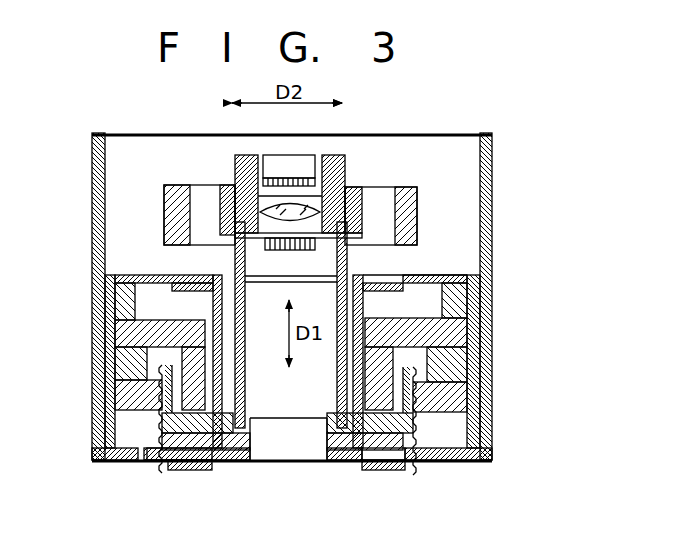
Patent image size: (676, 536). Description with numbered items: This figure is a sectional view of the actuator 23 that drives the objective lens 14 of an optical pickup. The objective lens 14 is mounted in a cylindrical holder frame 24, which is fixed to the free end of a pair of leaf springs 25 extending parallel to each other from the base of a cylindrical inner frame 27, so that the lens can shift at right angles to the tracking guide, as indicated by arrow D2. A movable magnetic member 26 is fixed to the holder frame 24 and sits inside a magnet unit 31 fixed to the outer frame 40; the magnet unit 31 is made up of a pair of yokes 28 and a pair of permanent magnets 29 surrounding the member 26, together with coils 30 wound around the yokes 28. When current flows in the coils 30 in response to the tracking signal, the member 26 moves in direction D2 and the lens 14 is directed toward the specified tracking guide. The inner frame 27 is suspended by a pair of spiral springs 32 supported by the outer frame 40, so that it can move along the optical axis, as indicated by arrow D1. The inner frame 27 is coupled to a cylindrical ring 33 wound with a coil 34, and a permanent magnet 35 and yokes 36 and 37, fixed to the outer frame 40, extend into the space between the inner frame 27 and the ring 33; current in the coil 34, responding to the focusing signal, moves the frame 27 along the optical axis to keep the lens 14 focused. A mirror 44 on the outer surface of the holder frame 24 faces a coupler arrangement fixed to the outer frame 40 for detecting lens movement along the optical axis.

The objective lens 14 is at (312, 215).
The actuator 23 is at (498, 258).
The cylindrical holder frame 24 is at (238, 172).
The leaf springs 25 is at (238, 265).
The movable magnetic member 26 is at (352, 193).
The cylindrical inner frame 27 is at (250, 440).
The yokes 28 is at (377, 200).
The permanent magnets 29 is at (178, 196).
The coils 30 is at (298, 180).
The magnet unit 31 is at (412, 185).
The spiral springs 32 is at (421, 275).
The cylindrical ring 33 is at (192, 440).
The coil 34 is at (150, 435).
The permanent magnet 35 is at (125, 372).
The yoke 36 is at (125, 332).
The yoke 37 is at (130, 398).
The outer frame 40 is at (97, 192).
The mirror 44 is at (280, 167).